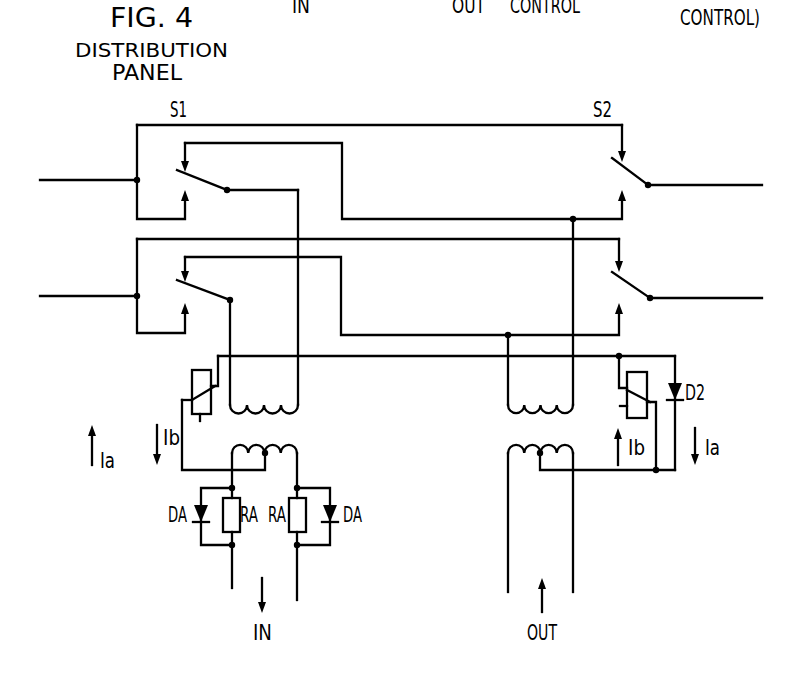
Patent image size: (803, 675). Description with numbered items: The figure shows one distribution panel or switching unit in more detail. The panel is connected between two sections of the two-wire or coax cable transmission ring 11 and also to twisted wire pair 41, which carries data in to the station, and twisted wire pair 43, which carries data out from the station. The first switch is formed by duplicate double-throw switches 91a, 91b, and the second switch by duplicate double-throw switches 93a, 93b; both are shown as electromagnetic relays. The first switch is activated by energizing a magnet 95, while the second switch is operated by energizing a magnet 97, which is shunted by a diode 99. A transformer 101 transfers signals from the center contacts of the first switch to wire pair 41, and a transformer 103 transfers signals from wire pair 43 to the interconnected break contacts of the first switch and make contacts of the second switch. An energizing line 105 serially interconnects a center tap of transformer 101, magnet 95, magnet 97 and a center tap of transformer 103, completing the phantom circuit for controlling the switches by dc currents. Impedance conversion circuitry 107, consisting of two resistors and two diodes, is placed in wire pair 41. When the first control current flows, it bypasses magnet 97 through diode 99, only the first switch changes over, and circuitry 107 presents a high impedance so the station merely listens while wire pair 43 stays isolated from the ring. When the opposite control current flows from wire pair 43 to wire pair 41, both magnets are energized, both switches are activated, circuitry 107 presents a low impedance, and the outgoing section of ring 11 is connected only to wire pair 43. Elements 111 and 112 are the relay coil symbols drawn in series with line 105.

The transmission ring 11 is at (57, 181).
The double-throw switch 91a is at (188, 174).
The double-throw switch 91b is at (188, 290).
The double-throw switch 93a is at (632, 168).
The double-throw switch 93b is at (632, 282).
The magnet 95 is at (200, 421).
The magnet 97 is at (620, 406).
The diode 99 is at (677, 383).
The transformer 101 is at (264, 318).
The transformer 103 is at (540, 329).
The energizing line 105 is at (412, 357).
The impedance conversion circuitry 107 is at (338, 478).
The relay coil 111 is at (208, 410).
The relay coil 112 is at (607, 414).
The twisted wire pair 41 is at (297, 565).
The twisted wire pair 43 is at (573, 548).